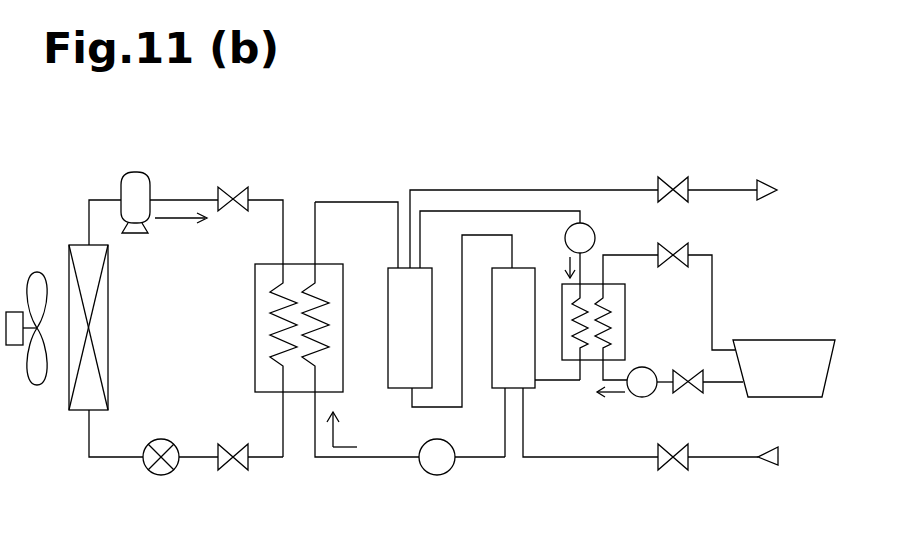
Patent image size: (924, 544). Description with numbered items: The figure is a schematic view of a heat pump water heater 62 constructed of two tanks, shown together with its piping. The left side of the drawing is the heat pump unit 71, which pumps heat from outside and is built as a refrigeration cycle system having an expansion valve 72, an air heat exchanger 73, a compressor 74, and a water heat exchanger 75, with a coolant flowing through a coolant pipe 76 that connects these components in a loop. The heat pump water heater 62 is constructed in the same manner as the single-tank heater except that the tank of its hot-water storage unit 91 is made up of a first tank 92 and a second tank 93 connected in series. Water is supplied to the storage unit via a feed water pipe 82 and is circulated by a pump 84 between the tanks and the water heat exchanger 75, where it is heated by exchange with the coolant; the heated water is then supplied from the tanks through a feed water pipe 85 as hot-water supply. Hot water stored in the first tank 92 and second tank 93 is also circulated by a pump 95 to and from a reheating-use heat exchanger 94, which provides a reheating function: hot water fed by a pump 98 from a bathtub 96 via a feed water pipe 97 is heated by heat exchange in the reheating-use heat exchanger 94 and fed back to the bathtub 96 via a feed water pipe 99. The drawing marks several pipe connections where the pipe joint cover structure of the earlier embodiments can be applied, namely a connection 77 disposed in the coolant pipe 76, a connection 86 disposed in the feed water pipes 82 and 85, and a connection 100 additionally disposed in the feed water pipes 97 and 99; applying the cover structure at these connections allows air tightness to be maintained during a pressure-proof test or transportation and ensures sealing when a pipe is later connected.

The heat pump water heater 62 is at (359, 276).
The heat pump unit 71 is at (186, 190).
The expansion valve 72 is at (161, 475).
The air heat exchanger 73 is at (69, 396).
The compressor 74 is at (124, 175).
The water heat exchanger 75 is at (255, 343).
The coolant pipe 76 is at (95, 458).
The connection 77 is at (238, 188).
The feed water pipe 82 is at (705, 458).
The pump 84 is at (440, 476).
The feed water pipe 85 is at (720, 189).
The connection 86 is at (666, 178).
The hot-water storage unit 91 is at (583, 190).
The first tank 92 is at (388, 362).
The second tank 93 is at (492, 380).
The reheating-use heat exchanger 94 is at (625, 312).
The pump 95 is at (596, 232).
The bathtub 96 is at (816, 340).
The feed water pipe 97 is at (723, 383).
The pump 98 is at (640, 397).
The feed water pipe 99 is at (712, 272).
The connection 100 is at (678, 244).